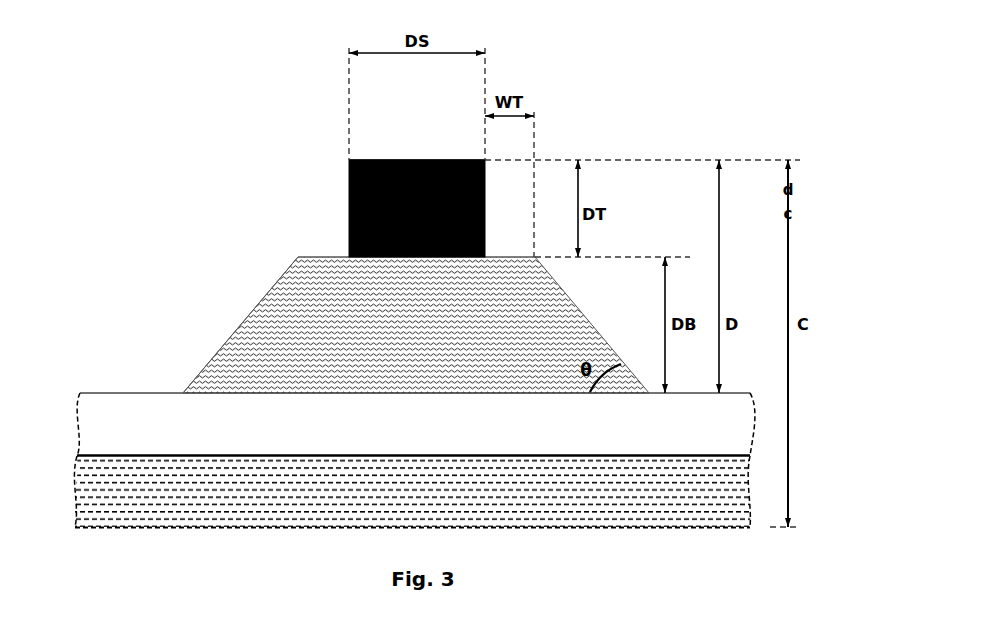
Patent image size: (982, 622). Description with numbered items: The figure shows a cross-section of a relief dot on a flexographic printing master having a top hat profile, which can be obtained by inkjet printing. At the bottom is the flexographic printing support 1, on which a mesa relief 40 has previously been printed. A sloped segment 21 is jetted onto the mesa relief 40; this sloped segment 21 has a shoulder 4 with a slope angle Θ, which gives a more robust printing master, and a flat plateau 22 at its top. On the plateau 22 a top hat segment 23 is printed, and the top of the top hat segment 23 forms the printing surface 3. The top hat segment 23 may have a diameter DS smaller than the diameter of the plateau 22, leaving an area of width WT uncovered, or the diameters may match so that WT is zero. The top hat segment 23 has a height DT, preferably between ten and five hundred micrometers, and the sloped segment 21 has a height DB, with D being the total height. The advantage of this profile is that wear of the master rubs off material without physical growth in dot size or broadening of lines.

The flexographic printing support 1 is at (122, 485).
The mesa relief 40 is at (157, 435).
The shoulder 4 is at (212, 355).
The sloped segment 21 is at (305, 343).
The plateau 22 is at (325, 257).
The top hat segment 23 is at (347, 175).
The printing surface 3 is at (410, 160).